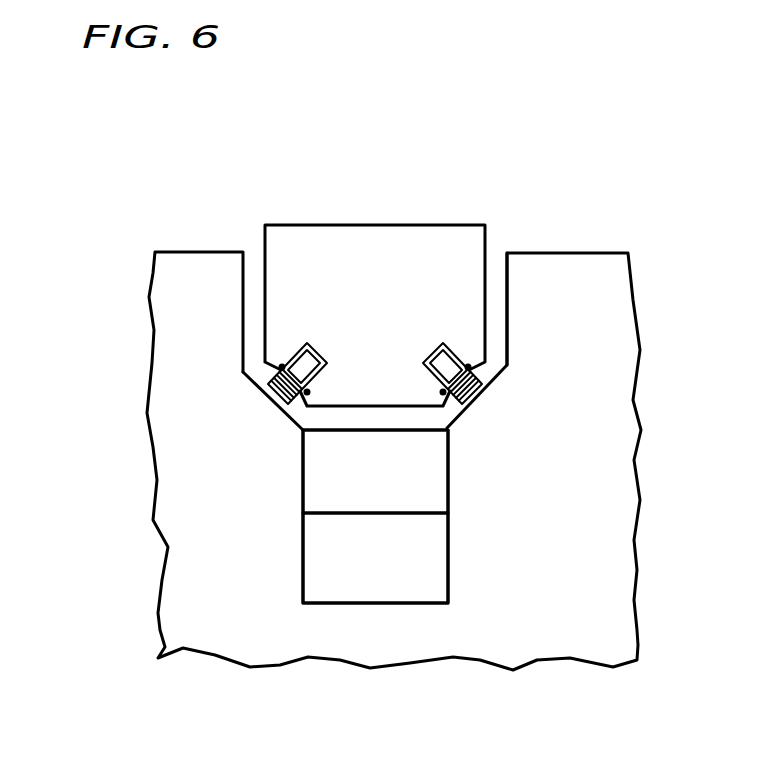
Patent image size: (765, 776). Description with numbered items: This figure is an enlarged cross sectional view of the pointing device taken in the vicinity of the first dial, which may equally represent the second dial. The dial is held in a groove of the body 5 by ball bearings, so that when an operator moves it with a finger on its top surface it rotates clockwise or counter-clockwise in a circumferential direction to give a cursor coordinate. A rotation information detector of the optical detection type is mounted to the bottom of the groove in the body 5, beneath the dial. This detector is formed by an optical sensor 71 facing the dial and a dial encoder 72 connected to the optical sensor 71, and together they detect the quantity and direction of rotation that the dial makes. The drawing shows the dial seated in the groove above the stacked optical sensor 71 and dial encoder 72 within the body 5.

The body 5 is at (572, 629).
The optical sensor 71 is at (396, 490).
The dial encoder 72 is at (406, 575).